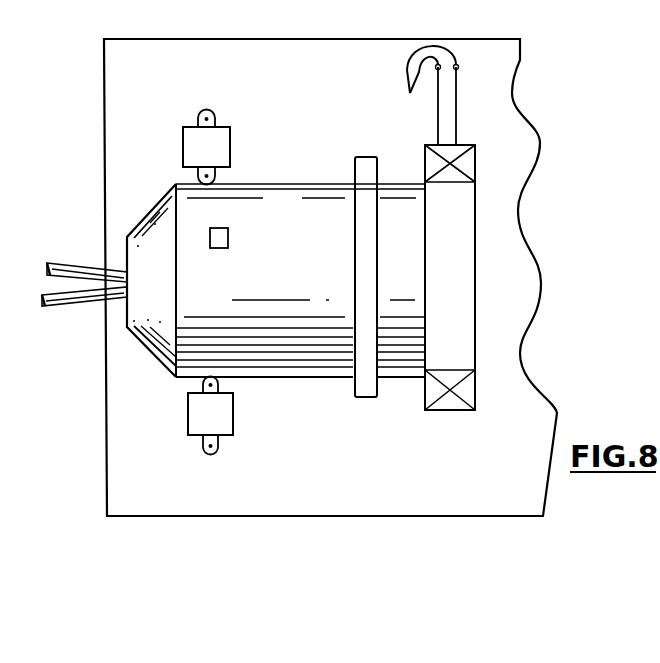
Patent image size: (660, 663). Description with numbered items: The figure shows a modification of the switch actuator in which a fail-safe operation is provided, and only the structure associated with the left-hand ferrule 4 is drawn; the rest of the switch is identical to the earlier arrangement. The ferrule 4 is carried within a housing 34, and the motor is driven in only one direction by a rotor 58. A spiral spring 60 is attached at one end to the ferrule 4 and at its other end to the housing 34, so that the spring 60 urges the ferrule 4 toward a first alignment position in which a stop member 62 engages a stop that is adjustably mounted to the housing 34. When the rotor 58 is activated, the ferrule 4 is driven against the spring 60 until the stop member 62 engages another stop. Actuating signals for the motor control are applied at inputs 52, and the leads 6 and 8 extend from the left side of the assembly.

The housing 34 is at (509, 62).
The left-hand ferrule 4 is at (290, 378).
The power cable 6 is at (78, 263).
The power cable 8 is at (95, 305).
The stop member 62 is at (228, 236).
The spiral spring 60 is at (360, 397).
The rotor 58 is at (452, 410).
The inputs 52 is at (415, 95).